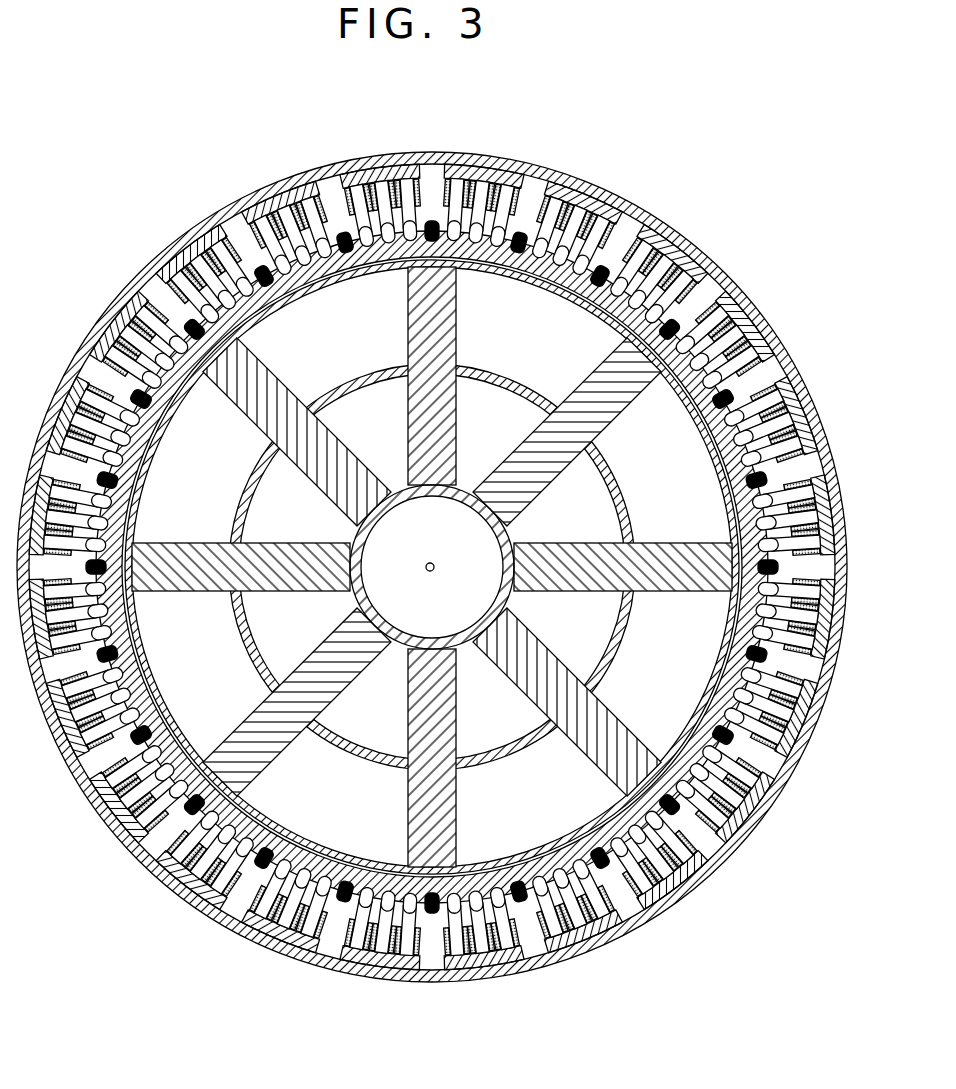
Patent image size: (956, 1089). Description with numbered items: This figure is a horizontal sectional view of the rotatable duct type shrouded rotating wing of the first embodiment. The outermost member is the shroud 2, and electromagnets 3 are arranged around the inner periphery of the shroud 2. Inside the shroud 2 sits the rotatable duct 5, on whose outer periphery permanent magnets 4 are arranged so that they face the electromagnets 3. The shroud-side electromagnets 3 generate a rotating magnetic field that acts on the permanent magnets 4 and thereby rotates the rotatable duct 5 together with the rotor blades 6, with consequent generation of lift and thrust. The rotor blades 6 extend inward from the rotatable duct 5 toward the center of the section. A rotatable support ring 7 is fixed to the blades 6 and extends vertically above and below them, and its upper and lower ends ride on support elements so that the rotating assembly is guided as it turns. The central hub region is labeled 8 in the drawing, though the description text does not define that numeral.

The shroud 2 is at (138, 855).
The electromagnets 3 is at (262, 882).
The permanent magnets 4 is at (337, 898).
The rotatable duct 5 is at (421, 885).
The rotor blades 6 is at (457, 815).
The rotatable support ring 7 is at (453, 757).
The hub 8 is at (505, 602).